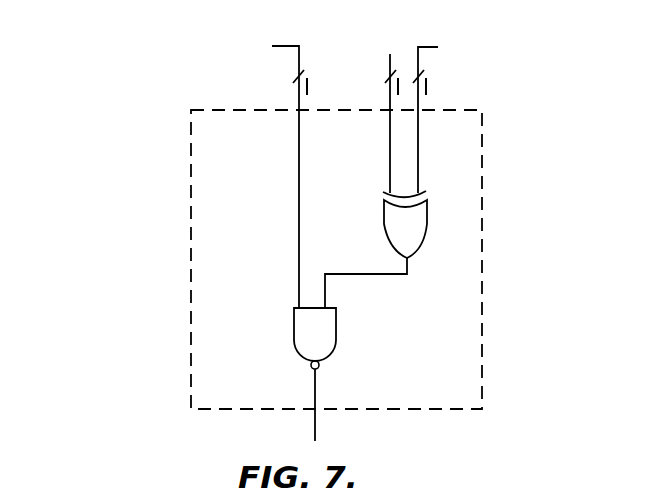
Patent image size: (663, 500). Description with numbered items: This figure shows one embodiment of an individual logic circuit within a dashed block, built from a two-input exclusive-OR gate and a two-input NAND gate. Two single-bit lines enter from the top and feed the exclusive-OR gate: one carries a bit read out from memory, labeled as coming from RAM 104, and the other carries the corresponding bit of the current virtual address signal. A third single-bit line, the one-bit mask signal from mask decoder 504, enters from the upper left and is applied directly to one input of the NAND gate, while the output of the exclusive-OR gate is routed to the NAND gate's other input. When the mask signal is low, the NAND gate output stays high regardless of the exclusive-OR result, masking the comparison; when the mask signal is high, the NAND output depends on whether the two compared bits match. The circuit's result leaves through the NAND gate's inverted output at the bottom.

The mask decoder 504 is at (170, 172).
The RAM 104 is at (495, 115).